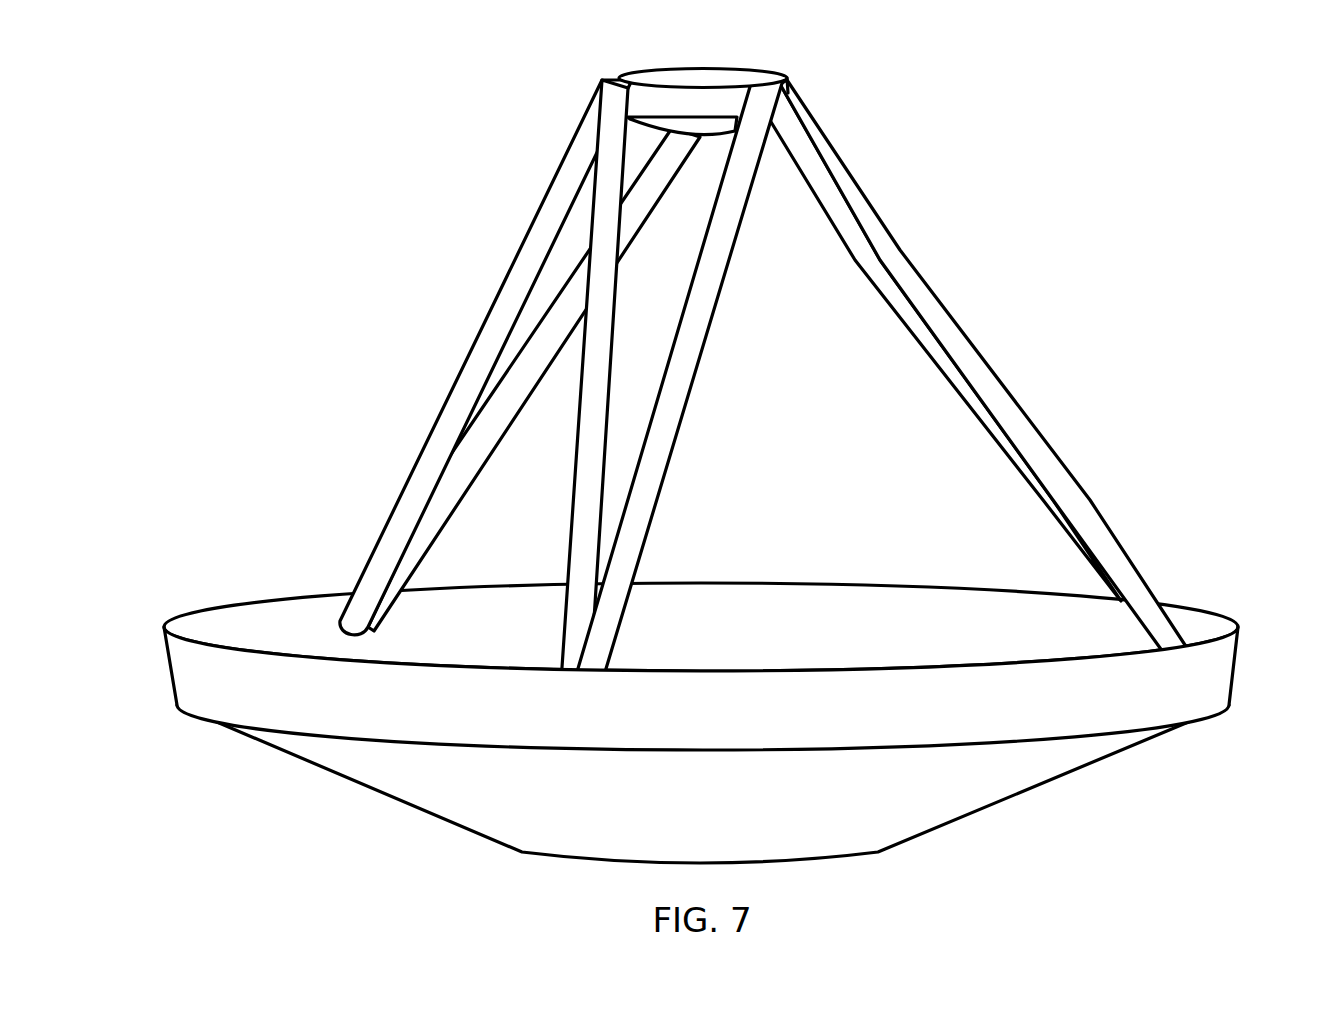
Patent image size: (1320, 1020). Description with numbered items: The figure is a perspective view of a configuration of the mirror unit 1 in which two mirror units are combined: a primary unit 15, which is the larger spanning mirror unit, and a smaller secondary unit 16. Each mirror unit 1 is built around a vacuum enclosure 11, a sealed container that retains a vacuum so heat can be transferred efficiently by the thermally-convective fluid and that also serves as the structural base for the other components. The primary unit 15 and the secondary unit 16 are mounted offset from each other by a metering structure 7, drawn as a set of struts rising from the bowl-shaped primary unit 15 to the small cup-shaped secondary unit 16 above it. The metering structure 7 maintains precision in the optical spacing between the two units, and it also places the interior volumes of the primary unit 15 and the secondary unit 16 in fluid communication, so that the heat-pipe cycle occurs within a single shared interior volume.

The mirror unit 1 is at (701, 439).
The metering structure 7 is at (521, 272).
The vacuum enclosure 11 is at (708, 76).
The primary unit 15 is at (386, 800).
The secondary unit 16 is at (703, 439).